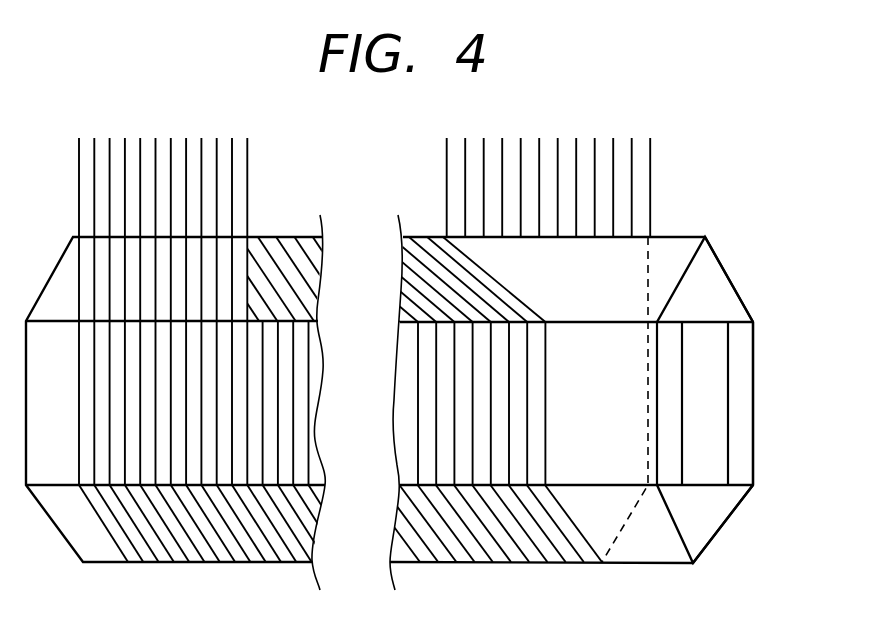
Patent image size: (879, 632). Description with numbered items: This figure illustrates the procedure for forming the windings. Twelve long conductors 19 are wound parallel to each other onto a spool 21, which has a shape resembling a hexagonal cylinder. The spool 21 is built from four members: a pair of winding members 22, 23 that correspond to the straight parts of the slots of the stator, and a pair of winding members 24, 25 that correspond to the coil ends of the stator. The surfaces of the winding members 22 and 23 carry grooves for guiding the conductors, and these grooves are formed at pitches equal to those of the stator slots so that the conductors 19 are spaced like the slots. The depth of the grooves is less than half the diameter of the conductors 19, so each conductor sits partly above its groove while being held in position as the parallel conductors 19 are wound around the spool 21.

The long conductor 19 is at (651, 167).
The spool 21 is at (683, 237).
The winding member 22 is at (668, 402).
The winding member 23 is at (740, 442).
The winding member 24 is at (708, 288).
The winding member 25 is at (693, 513).